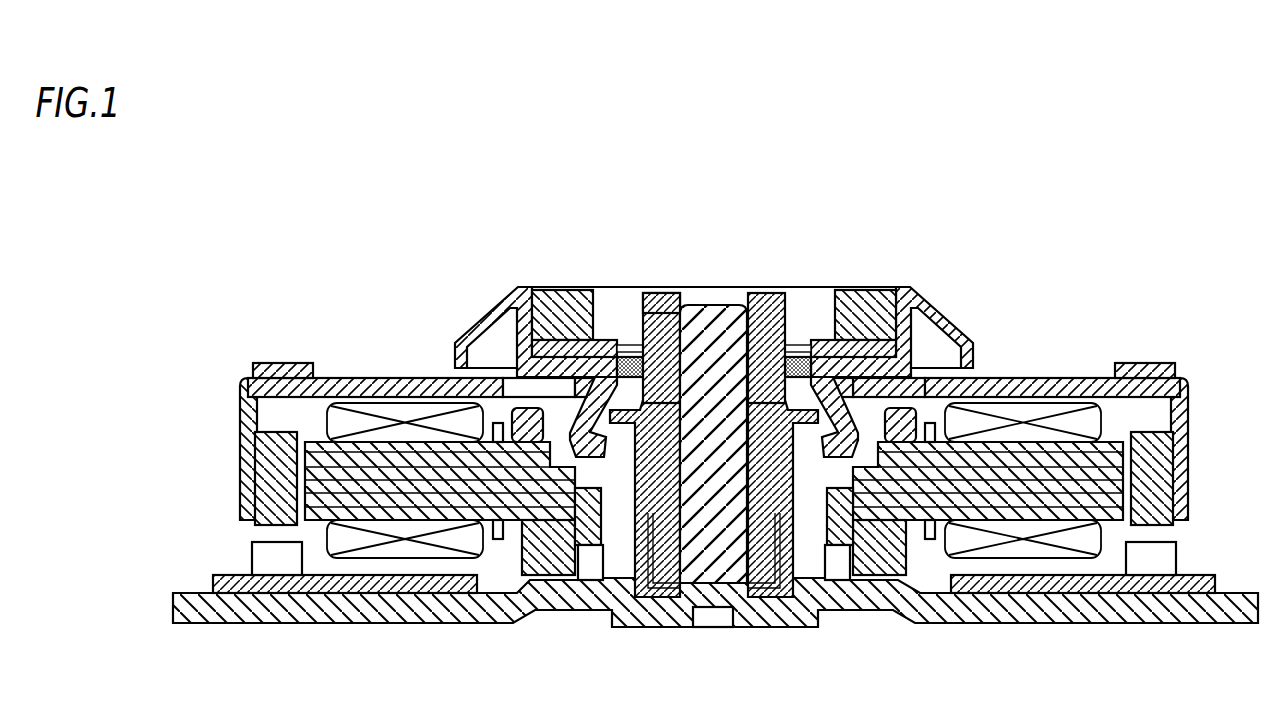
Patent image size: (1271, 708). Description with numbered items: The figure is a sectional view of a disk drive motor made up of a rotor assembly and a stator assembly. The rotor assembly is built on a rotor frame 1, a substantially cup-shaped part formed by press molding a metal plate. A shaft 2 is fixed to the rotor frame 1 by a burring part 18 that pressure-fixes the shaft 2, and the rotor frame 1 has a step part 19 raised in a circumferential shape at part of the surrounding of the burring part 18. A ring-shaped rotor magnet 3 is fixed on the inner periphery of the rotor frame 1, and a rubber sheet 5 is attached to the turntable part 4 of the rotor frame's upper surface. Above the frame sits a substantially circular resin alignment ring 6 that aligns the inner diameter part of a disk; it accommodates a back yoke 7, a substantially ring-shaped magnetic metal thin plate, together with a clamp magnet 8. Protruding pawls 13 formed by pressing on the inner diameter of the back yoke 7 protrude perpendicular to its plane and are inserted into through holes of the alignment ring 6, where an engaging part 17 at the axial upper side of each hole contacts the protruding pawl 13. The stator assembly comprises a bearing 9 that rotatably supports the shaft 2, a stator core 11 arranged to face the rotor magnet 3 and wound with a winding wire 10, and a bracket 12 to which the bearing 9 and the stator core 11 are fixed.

The rotor frame 1 is at (1183, 423).
The shaft 2 is at (718, 577).
The rotor magnet 3 is at (1163, 517).
The turntable part 4 is at (382, 382).
The rubber sheet 5 is at (277, 363).
The alignment ring 6 is at (512, 298).
The back yoke 7 is at (593, 338).
The clamp magnet 8 is at (550, 292).
The bearing 9 is at (763, 553).
The winding wire 10 is at (1033, 417).
The stator core 11 is at (972, 447).
The bracket 12 is at (1083, 612).
The protruding pawl 13 is at (800, 342).
The engaging part 17 is at (795, 342).
The burring part 18 is at (673, 307).
The step part 19 is at (630, 342).